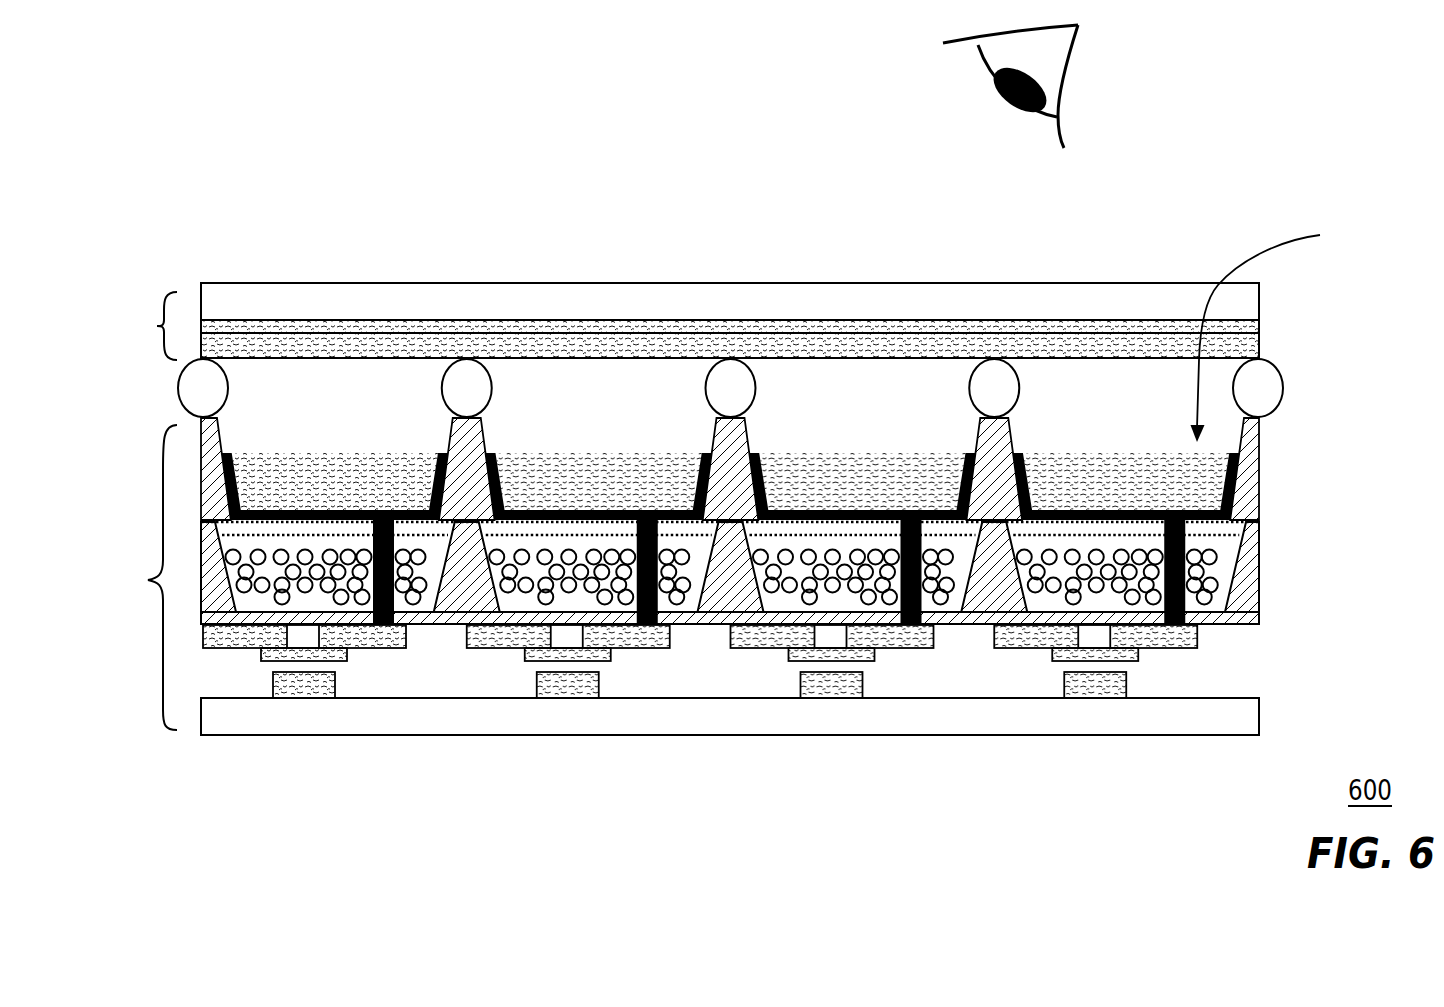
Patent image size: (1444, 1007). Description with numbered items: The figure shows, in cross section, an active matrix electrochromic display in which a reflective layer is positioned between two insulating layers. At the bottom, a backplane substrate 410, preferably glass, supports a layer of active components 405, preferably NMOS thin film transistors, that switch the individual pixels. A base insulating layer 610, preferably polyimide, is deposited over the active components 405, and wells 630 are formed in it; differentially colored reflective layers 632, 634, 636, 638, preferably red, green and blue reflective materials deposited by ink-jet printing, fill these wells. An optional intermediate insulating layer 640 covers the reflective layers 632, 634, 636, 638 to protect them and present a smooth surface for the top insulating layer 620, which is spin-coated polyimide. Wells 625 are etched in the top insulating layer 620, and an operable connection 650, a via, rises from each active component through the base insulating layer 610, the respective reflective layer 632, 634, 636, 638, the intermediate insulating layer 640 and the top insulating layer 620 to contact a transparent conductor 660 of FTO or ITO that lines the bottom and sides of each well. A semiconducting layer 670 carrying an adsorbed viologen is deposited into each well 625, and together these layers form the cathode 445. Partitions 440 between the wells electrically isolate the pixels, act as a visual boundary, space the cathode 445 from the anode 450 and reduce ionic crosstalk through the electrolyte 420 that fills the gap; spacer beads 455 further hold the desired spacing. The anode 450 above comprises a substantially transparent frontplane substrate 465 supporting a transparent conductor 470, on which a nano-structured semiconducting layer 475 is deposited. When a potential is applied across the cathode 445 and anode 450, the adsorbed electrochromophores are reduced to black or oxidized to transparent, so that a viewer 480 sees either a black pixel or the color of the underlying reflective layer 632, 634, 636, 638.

The active components 405 is at (522, 673).
The backplane substrate 410 is at (1067, 735).
The electrolyte 420 is at (882, 405).
The partitions 440 is at (713, 413).
The cathode 445 is at (138, 577).
The anode 450 is at (683, 321).
The spacer beads 455 is at (443, 378).
The frontplane substrate 465 is at (857, 283).
The transparent conductor 470 is at (217, 320).
The semiconducting layer 475 is at (352, 350).
The viewer 480 is at (1067, 57).
The base insulating layer 610 is at (1257, 558).
The top insulating layer 620 is at (1253, 473).
The wells 625 is at (1282, 332).
The wells 630 is at (803, 600).
The differentially colored reflective layer 632 is at (410, 598).
The differentially colored reflective layer 634 is at (670, 597).
The differentially colored reflective layer 636 is at (940, 600).
The differentially colored reflective layer 638 is at (1143, 595).
The intermediate insulating layer 640 is at (1027, 528).
The operable connection 650 is at (1183, 597).
The transparent conductor 660 is at (328, 512).
The semiconducting layer 670 is at (1166, 455).